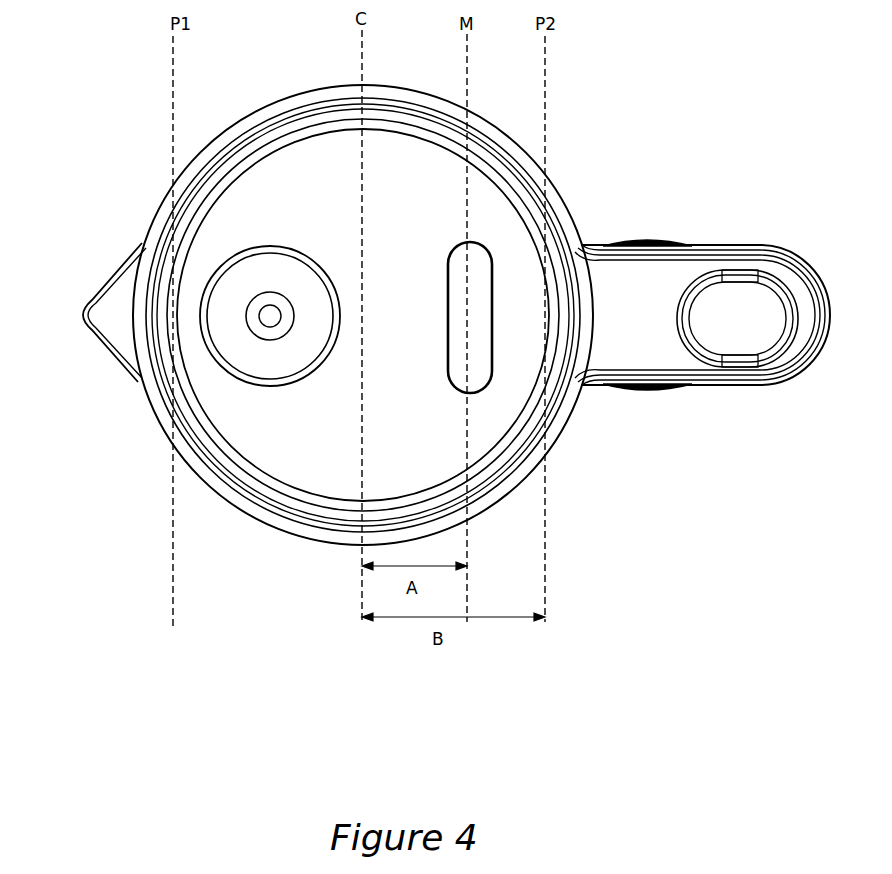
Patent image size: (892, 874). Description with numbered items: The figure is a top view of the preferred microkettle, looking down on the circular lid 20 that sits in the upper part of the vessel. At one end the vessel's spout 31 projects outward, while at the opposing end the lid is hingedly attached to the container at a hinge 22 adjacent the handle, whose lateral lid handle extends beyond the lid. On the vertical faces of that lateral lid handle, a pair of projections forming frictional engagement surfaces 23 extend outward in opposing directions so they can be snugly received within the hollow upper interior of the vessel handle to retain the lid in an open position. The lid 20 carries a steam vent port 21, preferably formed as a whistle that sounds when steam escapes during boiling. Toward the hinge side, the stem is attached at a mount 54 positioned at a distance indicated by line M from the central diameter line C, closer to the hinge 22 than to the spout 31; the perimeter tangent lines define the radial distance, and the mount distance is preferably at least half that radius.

The lid 20 is at (315, 197).
The steam vent port 21 is at (270, 318).
The hinge 22 is at (648, 240).
The frictional engagement surfaces 23 is at (742, 246).
The spout 31 is at (97, 333).
The mount 54 is at (455, 273).